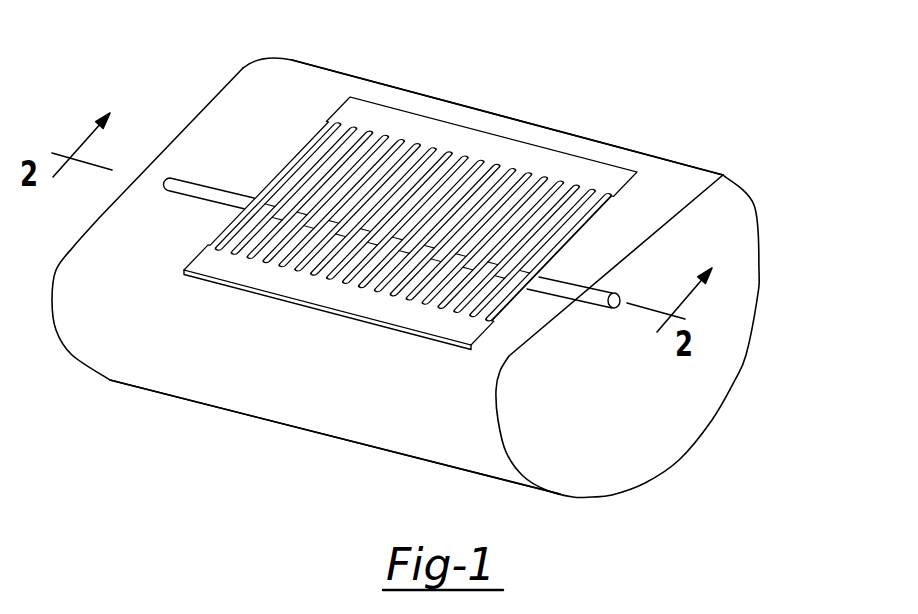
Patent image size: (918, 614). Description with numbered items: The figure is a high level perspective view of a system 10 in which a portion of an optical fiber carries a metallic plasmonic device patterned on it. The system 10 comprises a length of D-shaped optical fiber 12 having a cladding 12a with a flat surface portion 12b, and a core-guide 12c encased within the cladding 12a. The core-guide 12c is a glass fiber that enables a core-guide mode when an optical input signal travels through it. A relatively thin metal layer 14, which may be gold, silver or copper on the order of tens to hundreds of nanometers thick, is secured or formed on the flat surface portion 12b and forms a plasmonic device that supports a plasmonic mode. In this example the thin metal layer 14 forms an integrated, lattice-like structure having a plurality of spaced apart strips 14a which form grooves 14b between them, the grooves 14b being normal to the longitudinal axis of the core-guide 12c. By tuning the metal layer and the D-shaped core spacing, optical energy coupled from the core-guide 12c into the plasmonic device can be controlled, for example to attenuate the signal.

The system 10 is at (405, 257).
The D-shaped optical fiber 12 is at (405, 257).
The cladding 12a is at (458, 410).
The flat surface portion 12b is at (265, 130).
The core-guide 12c is at (613, 307).
The thin metal layer 14 is at (410, 183).
The strips 14a is at (421, 223).
The grooves 14b is at (358, 143).